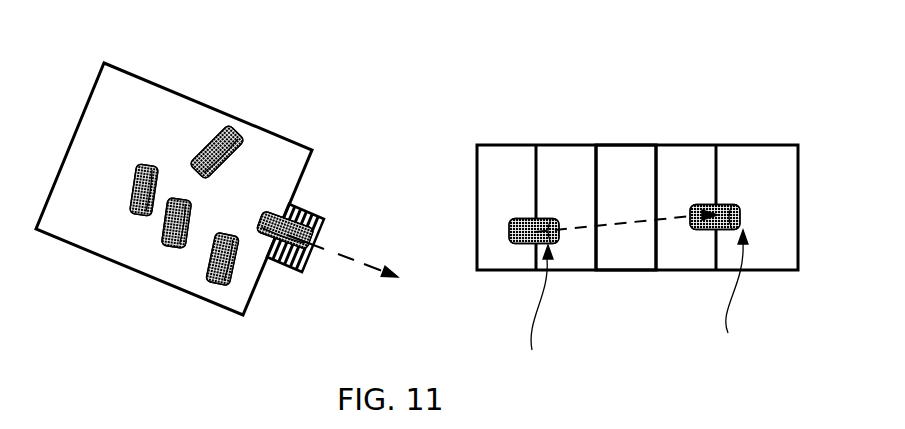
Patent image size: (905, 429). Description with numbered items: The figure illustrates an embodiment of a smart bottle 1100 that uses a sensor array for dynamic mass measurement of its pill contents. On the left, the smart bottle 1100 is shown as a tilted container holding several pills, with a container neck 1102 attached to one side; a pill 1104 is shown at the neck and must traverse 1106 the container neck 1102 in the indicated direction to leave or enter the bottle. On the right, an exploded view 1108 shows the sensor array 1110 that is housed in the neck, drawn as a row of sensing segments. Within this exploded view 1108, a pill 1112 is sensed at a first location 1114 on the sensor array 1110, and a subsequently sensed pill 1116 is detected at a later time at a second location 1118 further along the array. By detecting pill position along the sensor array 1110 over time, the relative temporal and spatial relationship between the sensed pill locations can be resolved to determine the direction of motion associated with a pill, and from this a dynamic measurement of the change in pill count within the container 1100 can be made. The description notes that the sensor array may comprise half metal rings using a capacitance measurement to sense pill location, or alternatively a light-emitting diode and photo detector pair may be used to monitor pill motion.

The smart bottle 1100 is at (145, 58).
The container neck 1102 is at (286, 269).
The pill 1104 is at (309, 214).
The traverse 1106 is at (348, 252).
The exploded view 1108 is at (745, 113).
The sensor array 1110 is at (623, 150).
The pill 1112 is at (510, 225).
The first location 1114 is at (557, 305).
The subsequently sensed pill 1116 is at (737, 213).
The second location 1118 is at (753, 288).